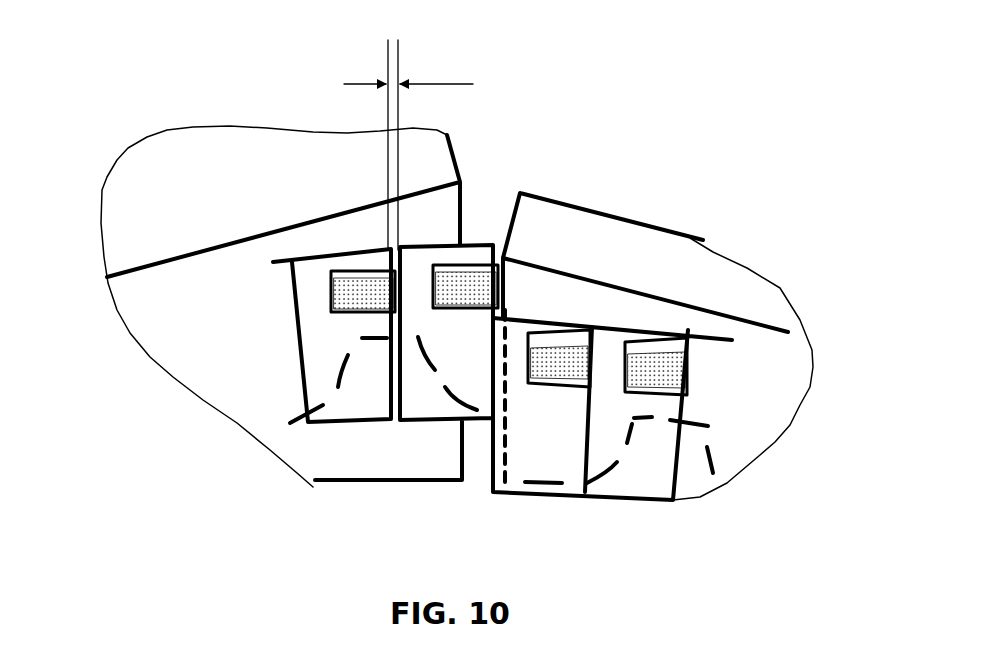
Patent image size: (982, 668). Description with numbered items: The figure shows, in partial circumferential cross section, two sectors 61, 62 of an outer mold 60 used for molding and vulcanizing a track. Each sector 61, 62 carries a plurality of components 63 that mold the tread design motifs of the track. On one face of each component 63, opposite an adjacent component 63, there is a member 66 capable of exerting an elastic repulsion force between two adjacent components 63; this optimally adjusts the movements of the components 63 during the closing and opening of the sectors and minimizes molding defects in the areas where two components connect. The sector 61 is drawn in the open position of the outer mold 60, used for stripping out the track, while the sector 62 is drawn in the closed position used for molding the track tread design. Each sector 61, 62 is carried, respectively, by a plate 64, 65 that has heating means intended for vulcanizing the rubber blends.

The outer mold 60 is at (512, 103).
The sector 61 is at (188, 287).
The sector 62 is at (673, 318).
The component 63 is at (425, 392).
The plate 64 is at (192, 192).
The plate 65 is at (635, 258).
The member 66 is at (463, 287).